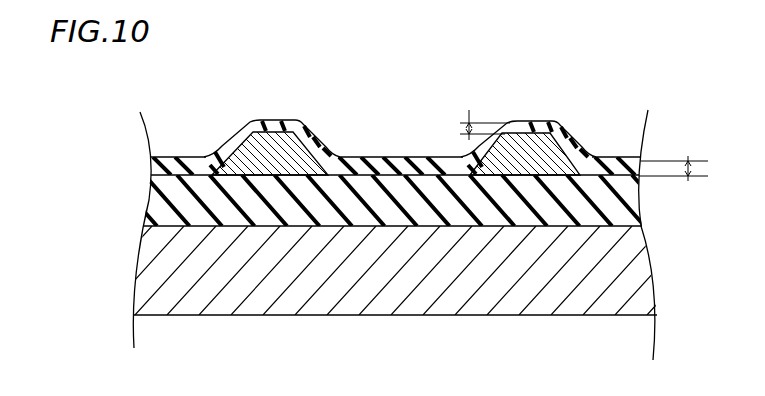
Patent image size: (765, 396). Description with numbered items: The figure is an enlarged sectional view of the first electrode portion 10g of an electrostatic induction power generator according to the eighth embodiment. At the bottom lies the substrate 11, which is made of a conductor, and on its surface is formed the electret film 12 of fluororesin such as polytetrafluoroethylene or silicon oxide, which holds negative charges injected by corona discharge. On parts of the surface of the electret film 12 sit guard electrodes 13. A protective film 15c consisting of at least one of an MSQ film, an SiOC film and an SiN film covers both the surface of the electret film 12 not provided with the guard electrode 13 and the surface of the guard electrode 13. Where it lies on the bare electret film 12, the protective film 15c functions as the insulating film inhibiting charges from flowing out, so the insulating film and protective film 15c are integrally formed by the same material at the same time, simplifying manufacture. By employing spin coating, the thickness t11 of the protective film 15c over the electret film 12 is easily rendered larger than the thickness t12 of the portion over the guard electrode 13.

The first electrode portion 10g is at (636, 84).
The substrate 11 is at (148, 281).
The electret film 12 is at (158, 203).
The guard electrode 13 is at (275, 142).
The protective film 15c is at (400, 170).
The thickness of protective film on electret film t11 is at (689, 168).
The thickness of protective film on guard electrode t12 is at (466, 125).